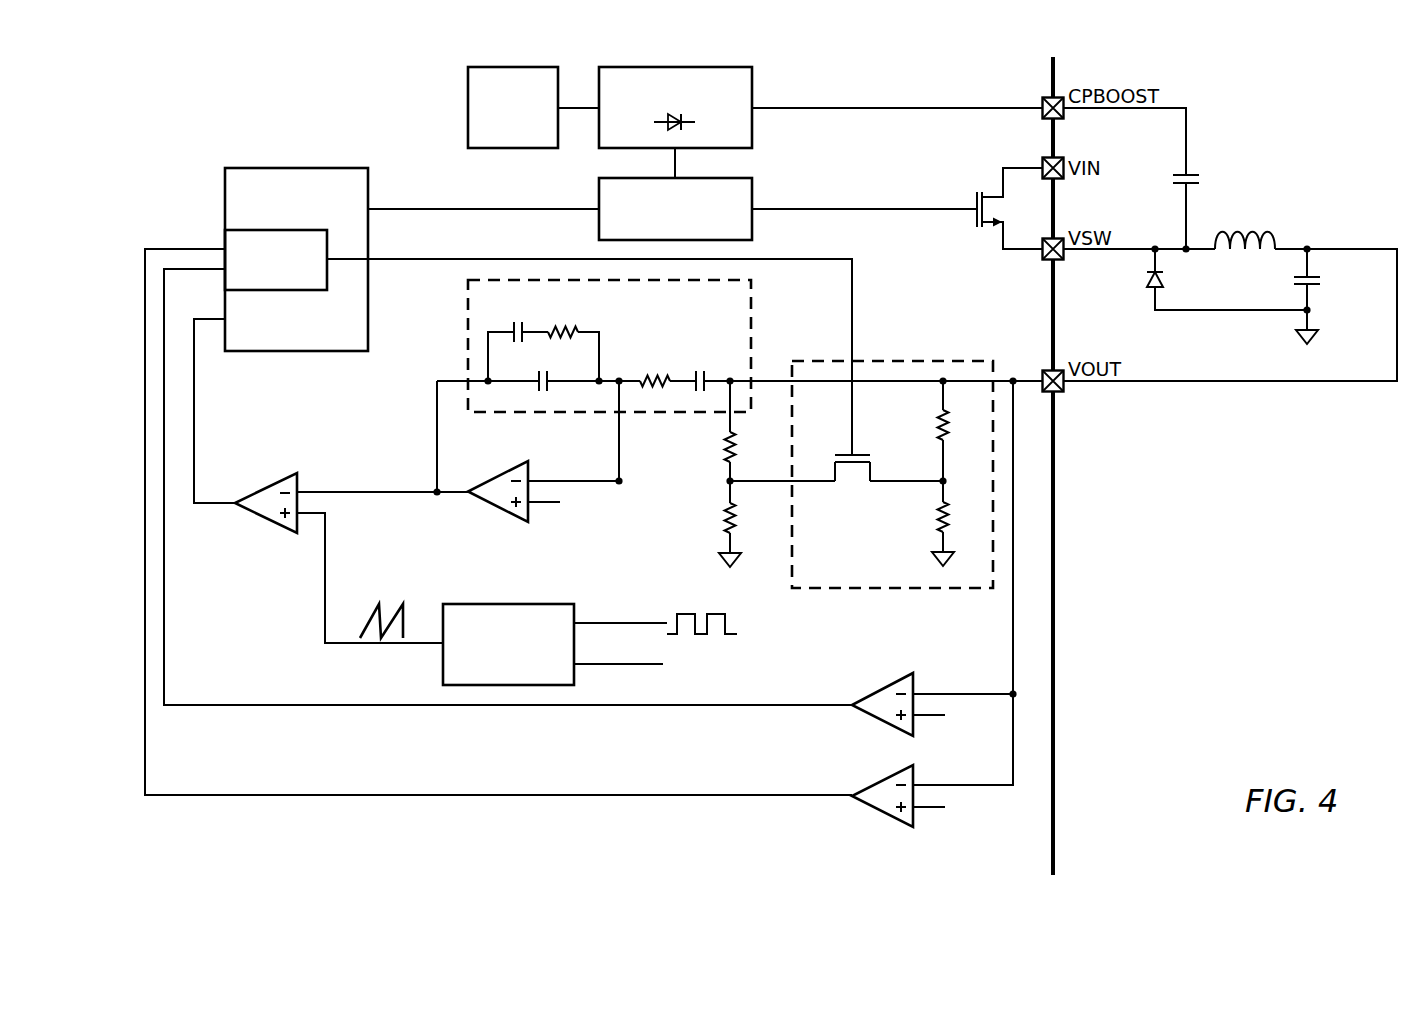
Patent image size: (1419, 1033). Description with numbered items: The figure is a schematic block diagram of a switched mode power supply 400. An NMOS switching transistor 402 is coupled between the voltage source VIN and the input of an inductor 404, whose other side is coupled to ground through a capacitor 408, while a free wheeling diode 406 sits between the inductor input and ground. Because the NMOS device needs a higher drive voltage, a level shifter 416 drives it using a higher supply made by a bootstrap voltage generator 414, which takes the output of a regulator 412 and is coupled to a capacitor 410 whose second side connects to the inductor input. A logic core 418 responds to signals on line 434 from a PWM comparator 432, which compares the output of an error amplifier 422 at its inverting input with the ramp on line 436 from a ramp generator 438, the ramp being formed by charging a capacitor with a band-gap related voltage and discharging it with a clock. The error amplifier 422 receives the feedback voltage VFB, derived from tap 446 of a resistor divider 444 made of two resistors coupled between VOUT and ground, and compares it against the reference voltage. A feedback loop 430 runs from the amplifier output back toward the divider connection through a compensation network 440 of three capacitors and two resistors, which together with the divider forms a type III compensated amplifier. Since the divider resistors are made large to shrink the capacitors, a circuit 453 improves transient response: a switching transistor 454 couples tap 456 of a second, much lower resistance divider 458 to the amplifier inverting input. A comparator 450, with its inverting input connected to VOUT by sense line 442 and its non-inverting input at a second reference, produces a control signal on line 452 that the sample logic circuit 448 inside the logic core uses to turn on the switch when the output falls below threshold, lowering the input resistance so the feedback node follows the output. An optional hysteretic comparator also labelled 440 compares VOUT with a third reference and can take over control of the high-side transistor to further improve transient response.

The switched mode power supply 400 is at (1350, 100).
The NMOS switching transistor 402 is at (976, 200).
The inductor 404 is at (1254, 236).
The free wheeling diode 406 is at (1147, 281).
The capacitor 408 is at (1322, 286).
The capacitor 410 is at (1202, 186).
The regulator 412 is at (468, 91).
The bootstrap voltage generator 414 is at (752, 95).
The level shifter 416 is at (599, 196).
The logic core 418 is at (282, 162).
The error amplifier 422 is at (494, 521).
The feedback loop 430 is at (437, 440).
The PWM comparator 432 is at (272, 526).
The line 434 is at (196, 440).
The line 436 is at (327, 584).
The ramp generator 438 is at (443, 671).
The compensation network 440 is at (458, 326).
The output voltage sense line 442 is at (1013, 646).
The resistor divider 444 is at (720, 450).
The tap 446 is at (726, 490).
The sample logic circuit 448 is at (278, 291).
The comparator 450 is at (882, 688).
The line 452 is at (264, 708).
The circuit 453 is at (898, 354).
The switching transistor 454 is at (841, 450).
The tap 456 is at (910, 480).
The second additional divider 458 is at (940, 384).